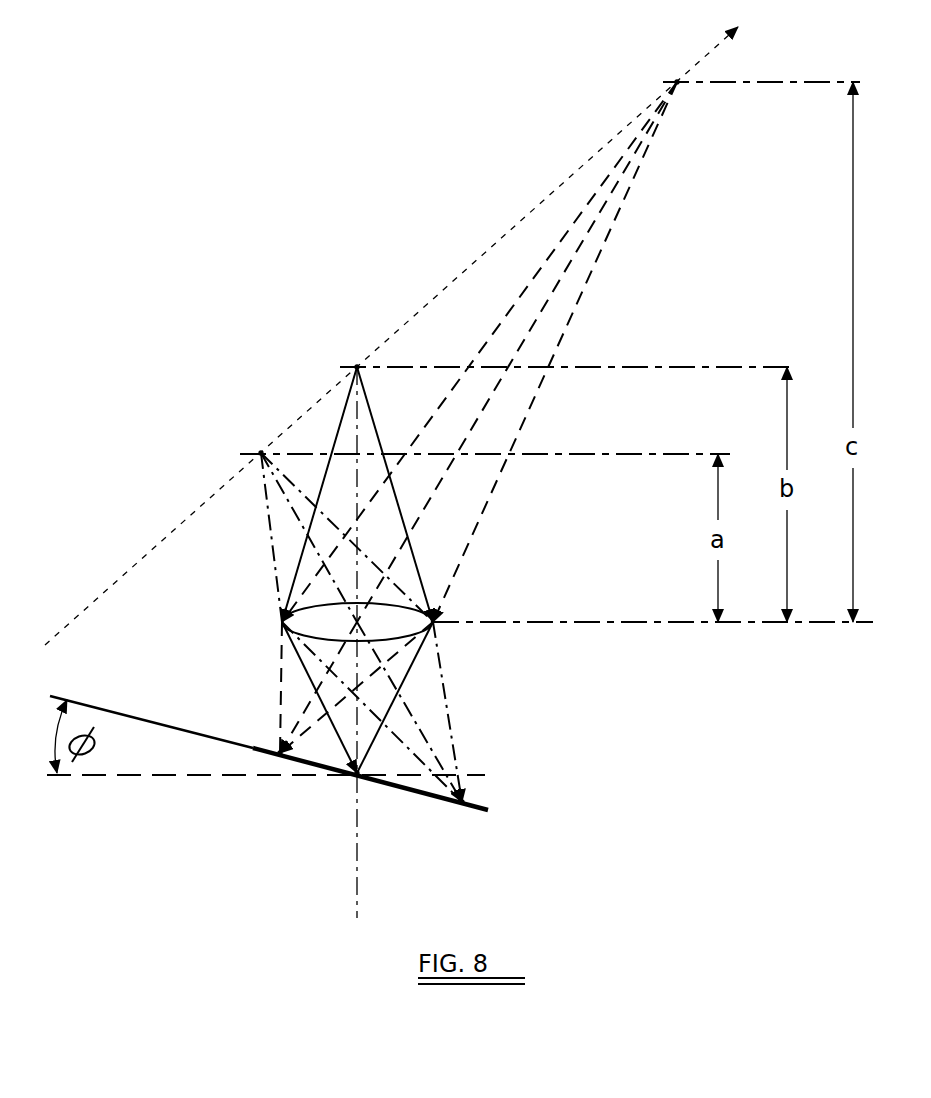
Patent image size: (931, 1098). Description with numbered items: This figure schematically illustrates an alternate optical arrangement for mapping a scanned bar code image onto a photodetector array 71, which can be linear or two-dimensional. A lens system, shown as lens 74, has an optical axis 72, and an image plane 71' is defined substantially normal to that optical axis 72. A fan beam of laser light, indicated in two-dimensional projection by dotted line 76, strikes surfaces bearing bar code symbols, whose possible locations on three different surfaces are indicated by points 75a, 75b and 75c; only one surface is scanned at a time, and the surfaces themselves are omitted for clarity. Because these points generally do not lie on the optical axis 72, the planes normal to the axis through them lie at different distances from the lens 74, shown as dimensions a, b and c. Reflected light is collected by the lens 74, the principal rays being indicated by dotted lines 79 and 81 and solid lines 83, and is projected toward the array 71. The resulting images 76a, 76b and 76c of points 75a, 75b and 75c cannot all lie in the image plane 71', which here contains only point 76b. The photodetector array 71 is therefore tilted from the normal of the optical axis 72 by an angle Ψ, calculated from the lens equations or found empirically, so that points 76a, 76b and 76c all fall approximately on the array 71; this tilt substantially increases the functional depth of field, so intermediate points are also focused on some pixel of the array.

The photodetector array 71 is at (305, 774).
The image plane 71' is at (327, 745).
The optical axis 72 is at (355, 838).
The lens 74 is at (440, 623).
The bar code symbol location 75a is at (677, 82).
The bar code symbol location 75b is at (357, 365).
The bar code symbol location 75c is at (261, 452).
The fan beam of light 76 is at (175, 528).
The image of point 75a 76a is at (280, 752).
The image of point 75b 76b is at (362, 770).
The image of point 75c 76c is at (465, 801).
The principal rays 79 is at (558, 240).
The principal rays 81 is at (310, 495).
The principal rays 83 is at (380, 440).